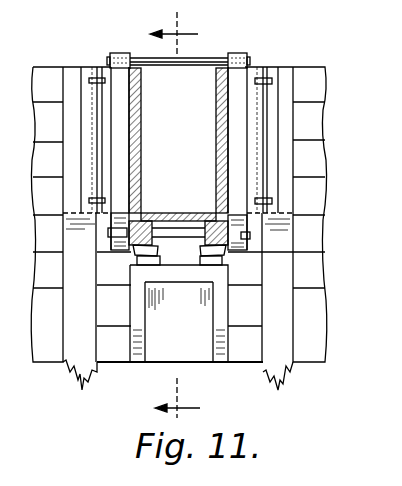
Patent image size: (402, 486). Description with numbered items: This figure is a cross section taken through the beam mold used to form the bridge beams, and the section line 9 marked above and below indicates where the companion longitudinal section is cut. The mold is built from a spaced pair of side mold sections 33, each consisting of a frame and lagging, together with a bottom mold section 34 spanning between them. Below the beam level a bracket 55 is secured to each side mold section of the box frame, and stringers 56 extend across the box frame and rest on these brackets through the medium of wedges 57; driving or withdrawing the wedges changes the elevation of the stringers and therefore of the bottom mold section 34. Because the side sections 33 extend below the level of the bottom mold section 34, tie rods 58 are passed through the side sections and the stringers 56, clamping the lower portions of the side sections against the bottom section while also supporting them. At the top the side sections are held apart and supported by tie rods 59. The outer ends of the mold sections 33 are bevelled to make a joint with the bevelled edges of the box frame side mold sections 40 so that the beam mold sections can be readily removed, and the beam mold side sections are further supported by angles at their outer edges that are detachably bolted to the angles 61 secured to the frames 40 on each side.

The section line 9— 9 is at (175, 215).
The side mold section 33 is at (215, 148).
The bottom mold section 34 is at (157, 216).
The box frame side mold section 40 is at (179, 228).
The bracket 55 is at (138, 310).
The stringer 56 is at (133, 251).
The wedge 57 is at (210, 262).
The tie rod 58 is at (178, 218).
The tie rod 59 is at (203, 60).
The angle 61 is at (107, 73).